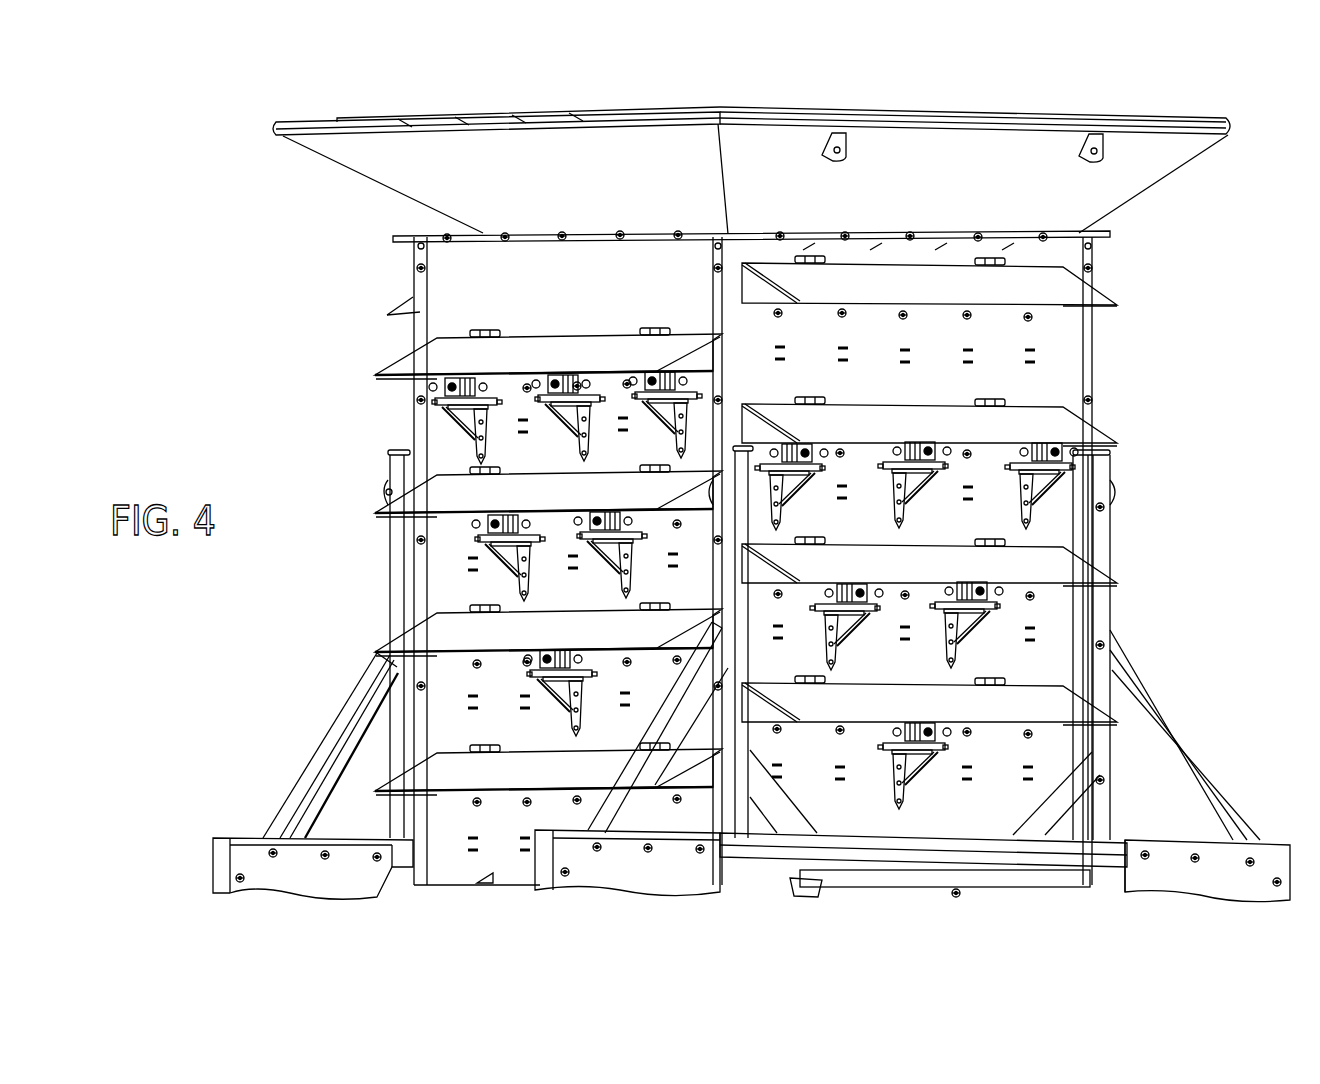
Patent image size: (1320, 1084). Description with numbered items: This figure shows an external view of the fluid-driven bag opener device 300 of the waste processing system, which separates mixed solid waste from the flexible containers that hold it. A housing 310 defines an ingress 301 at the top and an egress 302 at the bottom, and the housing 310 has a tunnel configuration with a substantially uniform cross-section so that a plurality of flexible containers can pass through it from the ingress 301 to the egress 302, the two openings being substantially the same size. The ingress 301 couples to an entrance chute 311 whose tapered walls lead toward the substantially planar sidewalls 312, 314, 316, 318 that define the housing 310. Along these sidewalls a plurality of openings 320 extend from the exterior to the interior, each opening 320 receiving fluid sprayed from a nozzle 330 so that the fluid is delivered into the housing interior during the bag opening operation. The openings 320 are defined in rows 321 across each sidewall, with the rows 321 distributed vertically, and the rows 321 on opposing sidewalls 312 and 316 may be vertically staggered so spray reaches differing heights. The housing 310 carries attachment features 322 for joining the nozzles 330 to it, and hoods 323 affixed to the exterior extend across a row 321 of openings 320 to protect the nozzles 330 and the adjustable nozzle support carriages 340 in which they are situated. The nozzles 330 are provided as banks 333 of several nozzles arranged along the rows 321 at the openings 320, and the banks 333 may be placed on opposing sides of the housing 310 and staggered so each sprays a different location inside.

The fluid-driven bag opener device 300 is at (1134, 100).
The ingress 301 is at (483, 222).
The egress 302 is at (1002, 896).
The housing 310 is at (447, 302).
The entrance chute 311 is at (373, 178).
The sidewall 312 is at (440, 322).
The sidewall 314 is at (1050, 665).
The sidewall 316 is at (1157, 813).
The sidewall 318 is at (366, 775).
The opening 320 is at (1036, 319).
The row 321 is at (762, 320).
The attachment feature 322 is at (1036, 363).
The hood 323 is at (432, 637).
The nozzle 330 is at (930, 447).
The bank of nozzles 333 is at (424, 418).
The adjustable nozzle support carriage 340 is at (1065, 448).